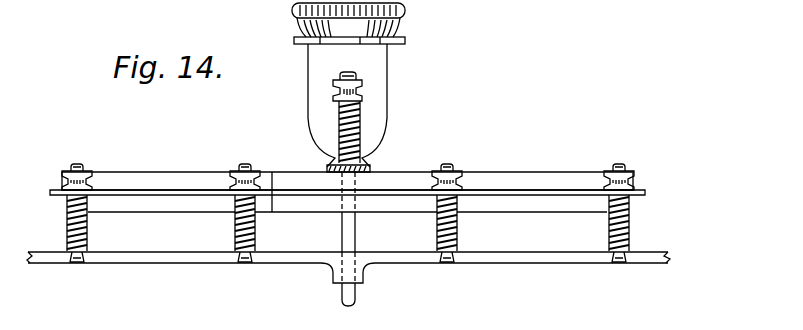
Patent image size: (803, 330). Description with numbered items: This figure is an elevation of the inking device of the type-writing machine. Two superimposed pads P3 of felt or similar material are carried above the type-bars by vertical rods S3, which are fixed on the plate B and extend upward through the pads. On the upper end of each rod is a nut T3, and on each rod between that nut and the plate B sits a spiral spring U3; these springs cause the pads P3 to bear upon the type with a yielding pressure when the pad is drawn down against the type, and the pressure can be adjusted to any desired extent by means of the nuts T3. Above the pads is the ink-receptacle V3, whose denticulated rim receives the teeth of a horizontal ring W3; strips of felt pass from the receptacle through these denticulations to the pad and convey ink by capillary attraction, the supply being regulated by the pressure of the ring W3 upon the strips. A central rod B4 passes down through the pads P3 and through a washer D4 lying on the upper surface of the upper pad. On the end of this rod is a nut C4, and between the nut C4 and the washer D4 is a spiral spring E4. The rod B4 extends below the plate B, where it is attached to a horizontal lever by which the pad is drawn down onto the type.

The horizontal ring W3 is at (405, 40).
The ink-receptacle V3 is at (387, 70).
The washer D4 is at (330, 168).
The nut C4 is at (362, 90).
The spiral spring E4 is at (362, 130).
The pads P3 is at (545, 160).
The plate B is at (348, 267).
The rod B4 is at (355, 233).
The nut T3 is at (458, 173).
The vertical rods S3 is at (67, 218).
The spiral spring U3 is at (87, 226).